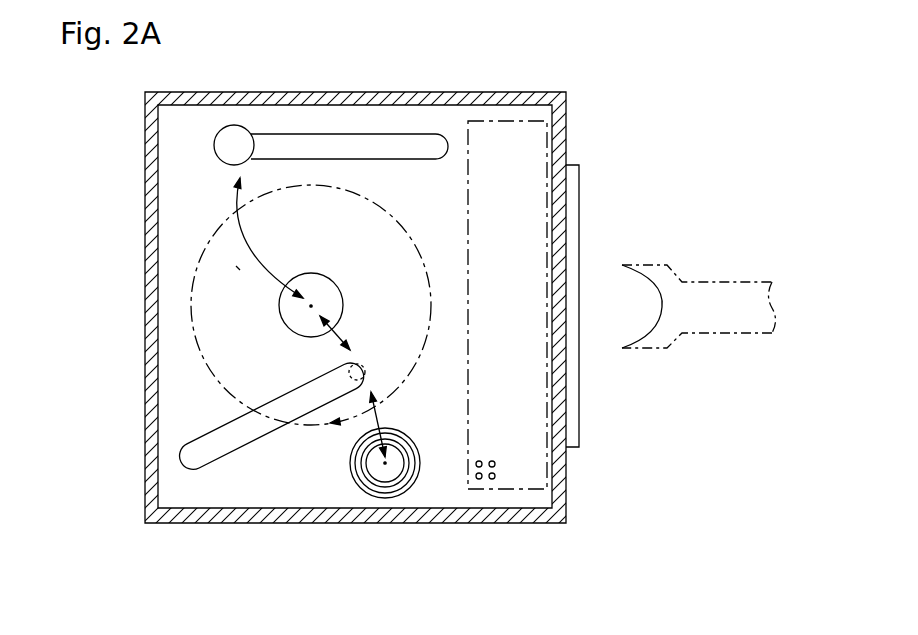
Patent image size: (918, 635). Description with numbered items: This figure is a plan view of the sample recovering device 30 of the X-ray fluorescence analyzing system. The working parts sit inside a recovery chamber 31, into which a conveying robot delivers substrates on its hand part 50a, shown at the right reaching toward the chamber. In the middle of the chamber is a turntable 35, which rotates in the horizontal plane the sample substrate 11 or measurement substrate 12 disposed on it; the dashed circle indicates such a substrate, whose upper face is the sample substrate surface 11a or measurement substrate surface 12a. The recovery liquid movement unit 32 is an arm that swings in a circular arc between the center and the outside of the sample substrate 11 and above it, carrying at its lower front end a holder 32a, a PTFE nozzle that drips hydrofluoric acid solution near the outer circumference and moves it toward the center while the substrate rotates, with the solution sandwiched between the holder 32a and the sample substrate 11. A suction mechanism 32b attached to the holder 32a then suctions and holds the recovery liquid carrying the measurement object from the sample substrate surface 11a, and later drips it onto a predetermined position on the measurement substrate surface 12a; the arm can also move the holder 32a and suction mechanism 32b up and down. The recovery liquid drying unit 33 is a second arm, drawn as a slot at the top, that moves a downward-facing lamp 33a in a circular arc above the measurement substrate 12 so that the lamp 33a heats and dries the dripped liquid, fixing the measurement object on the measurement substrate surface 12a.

The sample recovering device 30 is at (613, 162).
The recovery chamber 31 is at (369, 91).
The recovery liquid movement unit 32 is at (210, 469).
The holder 32a is at (348, 378).
The suction mechanism 32b is at (344, 503).
The recovery liquid drying unit 33 is at (321, 135).
The lamp 33a is at (235, 124).
The turntable 35 is at (280, 315).
The sample substrate 11 is at (238, 305).
The measurement substrate 12 is at (192, 302).
The sample substrate surface 11a is at (135, 232).
The measurement substrate surface 12a is at (238, 268).
The hand part 50a is at (707, 333).